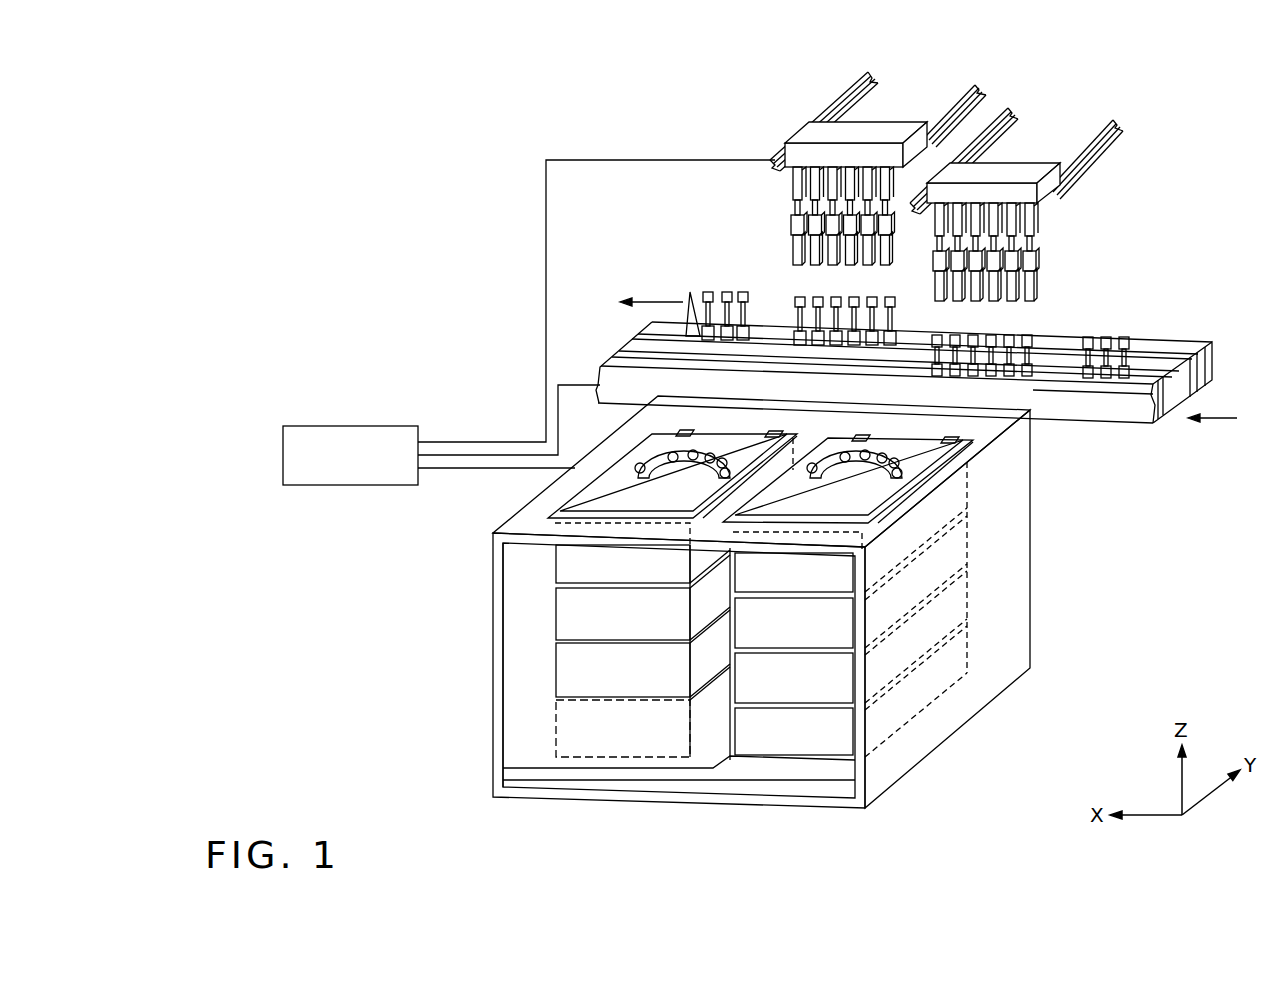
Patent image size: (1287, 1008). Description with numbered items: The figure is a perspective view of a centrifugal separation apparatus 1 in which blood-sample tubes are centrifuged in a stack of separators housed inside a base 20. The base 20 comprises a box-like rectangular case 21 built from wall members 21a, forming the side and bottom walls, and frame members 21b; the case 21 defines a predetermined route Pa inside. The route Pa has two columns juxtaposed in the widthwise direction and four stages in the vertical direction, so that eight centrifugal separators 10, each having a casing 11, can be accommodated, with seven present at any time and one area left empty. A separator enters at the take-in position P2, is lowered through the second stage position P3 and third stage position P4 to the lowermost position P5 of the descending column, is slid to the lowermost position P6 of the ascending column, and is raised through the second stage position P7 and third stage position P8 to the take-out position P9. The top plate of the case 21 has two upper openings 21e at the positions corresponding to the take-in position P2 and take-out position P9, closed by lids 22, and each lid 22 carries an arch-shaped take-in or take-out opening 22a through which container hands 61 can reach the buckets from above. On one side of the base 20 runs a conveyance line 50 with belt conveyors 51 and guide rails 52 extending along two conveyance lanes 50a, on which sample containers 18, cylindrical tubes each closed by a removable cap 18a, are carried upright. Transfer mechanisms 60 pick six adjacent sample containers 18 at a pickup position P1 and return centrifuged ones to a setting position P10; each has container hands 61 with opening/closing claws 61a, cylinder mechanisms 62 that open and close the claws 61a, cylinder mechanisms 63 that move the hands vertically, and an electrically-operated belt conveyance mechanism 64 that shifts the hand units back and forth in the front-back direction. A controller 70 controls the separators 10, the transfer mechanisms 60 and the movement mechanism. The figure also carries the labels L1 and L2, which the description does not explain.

The centrifugal separation apparatus 1 is at (530, 188).
The centrifugal separator 10 is at (693, 698).
The casing 11 is at (672, 628).
The sample container 18 is at (896, 320).
The removable cap 18a is at (907, 295).
The base 20 is at (1005, 488).
The case 21 is at (1008, 572).
The wall members 21a is at (1003, 615).
The frame members 21b is at (520, 666).
The upper openings 21e is at (820, 443).
The lid 22 is at (598, 503).
The take-in opening and take-out opening 22a is at (703, 452).
The conveyance line 50 is at (1192, 340).
The conveyance lane 50a is at (1070, 333).
The belt conveyor 51 is at (650, 338).
The guide rail 52 is at (640, 362).
The transfer mechanism 60 is at (897, 133).
The container hand 61 is at (793, 240).
The opening/closing claw 61a is at (793, 262).
The cylinder mechanism 62 is at (791, 222).
The cylinder mechanism 63 is at (793, 188).
The electrically-operated belt conveyance mechanism 64 is at (842, 93).
The controller 70 is at (392, 426).
The pickup position P1 is at (786, 296).
The take-in position P2 is at (595, 576).
The second stage position P3 is at (595, 631).
The third stage position P4 is at (595, 686).
The lowermost position of the descending column P5 is at (595, 744).
The lowermost position of the ascending column P6 is at (773, 745).
The second stage position P7 is at (773, 690).
The third stage position P8 is at (773, 637).
The take-out position P9 is at (773, 584).
The setting position P10 is at (1036, 322).
The predetermined route Pa is at (615, 552).
The path L1 is at (553, 675).
The path L2 is at (848, 696).